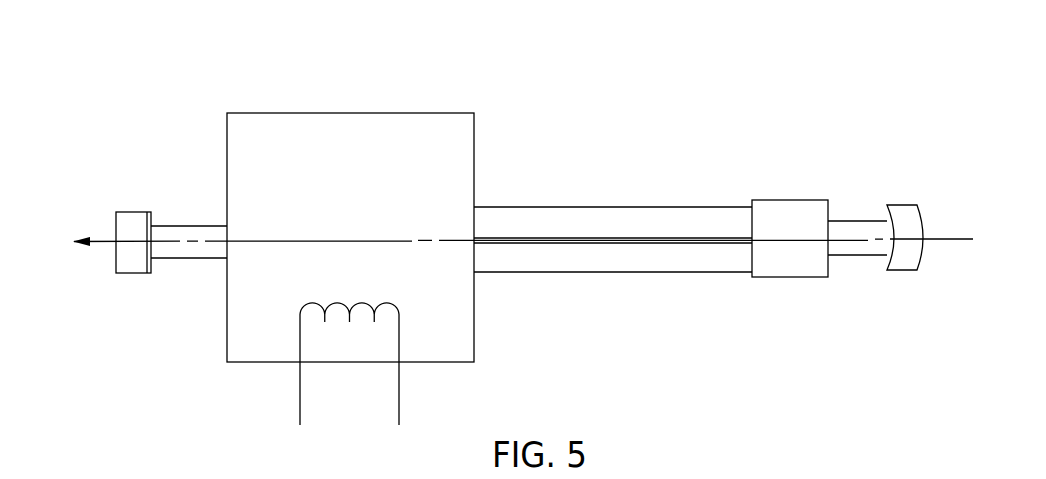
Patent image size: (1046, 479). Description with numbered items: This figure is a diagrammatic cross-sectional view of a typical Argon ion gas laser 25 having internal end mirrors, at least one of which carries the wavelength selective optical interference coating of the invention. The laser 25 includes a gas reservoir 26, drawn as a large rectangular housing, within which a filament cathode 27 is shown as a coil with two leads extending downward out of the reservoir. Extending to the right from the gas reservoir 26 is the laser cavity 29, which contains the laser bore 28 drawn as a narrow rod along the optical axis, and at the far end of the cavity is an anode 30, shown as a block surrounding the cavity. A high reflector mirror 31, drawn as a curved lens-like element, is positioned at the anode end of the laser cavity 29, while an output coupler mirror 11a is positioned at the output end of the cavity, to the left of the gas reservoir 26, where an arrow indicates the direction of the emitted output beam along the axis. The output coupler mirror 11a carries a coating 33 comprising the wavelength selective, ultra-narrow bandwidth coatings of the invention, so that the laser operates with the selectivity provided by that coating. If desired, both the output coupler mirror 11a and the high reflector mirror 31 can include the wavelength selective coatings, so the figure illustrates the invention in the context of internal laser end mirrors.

The Argon ion gas laser 25 is at (628, 82).
The gas reservoir 26 is at (288, 125).
The filament cathode 27 is at (300, 328).
The output coupler mirror 11a is at (137, 267).
The coating 33 is at (148, 215).
The laser cavity 29 is at (492, 202).
The laser bore 28 is at (512, 238).
The anode 30 is at (778, 207).
The high reflector mirror 31 is at (902, 260).